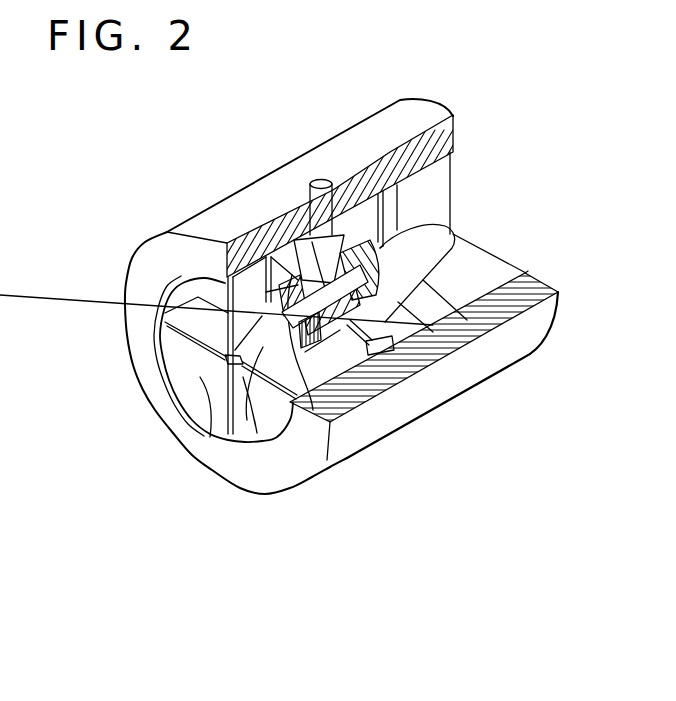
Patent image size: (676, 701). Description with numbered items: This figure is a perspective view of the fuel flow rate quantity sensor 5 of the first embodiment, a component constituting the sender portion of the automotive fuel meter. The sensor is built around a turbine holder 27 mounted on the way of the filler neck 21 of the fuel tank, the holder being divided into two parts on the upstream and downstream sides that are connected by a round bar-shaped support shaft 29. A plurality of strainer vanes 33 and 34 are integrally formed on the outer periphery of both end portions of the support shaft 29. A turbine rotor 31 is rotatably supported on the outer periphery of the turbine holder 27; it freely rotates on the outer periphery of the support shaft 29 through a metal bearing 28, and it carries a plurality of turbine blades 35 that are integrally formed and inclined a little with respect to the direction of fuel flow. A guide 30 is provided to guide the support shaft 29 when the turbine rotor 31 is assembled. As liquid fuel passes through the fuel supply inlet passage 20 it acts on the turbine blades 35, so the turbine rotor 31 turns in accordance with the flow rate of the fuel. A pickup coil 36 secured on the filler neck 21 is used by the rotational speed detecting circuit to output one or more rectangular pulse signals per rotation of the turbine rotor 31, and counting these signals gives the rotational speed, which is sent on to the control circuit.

The fuel flow rate quantity sensor 5 is at (438, 80).
The fuel supply inlet passage 20 is at (192, 417).
The filler neck 21 is at (242, 207).
The turbine holder 27 is at (413, 249).
The metal bearing 28 is at (372, 398).
The support shaft 29 is at (333, 427).
The guide 30 is at (445, 350).
The turbine rotor 31 is at (303, 224).
The strainer vane 33 is at (427, 187).
The strainer vane 34 is at (200, 323).
The turbine blade 35 is at (405, 365).
The pickup coil 36 is at (316, 177).